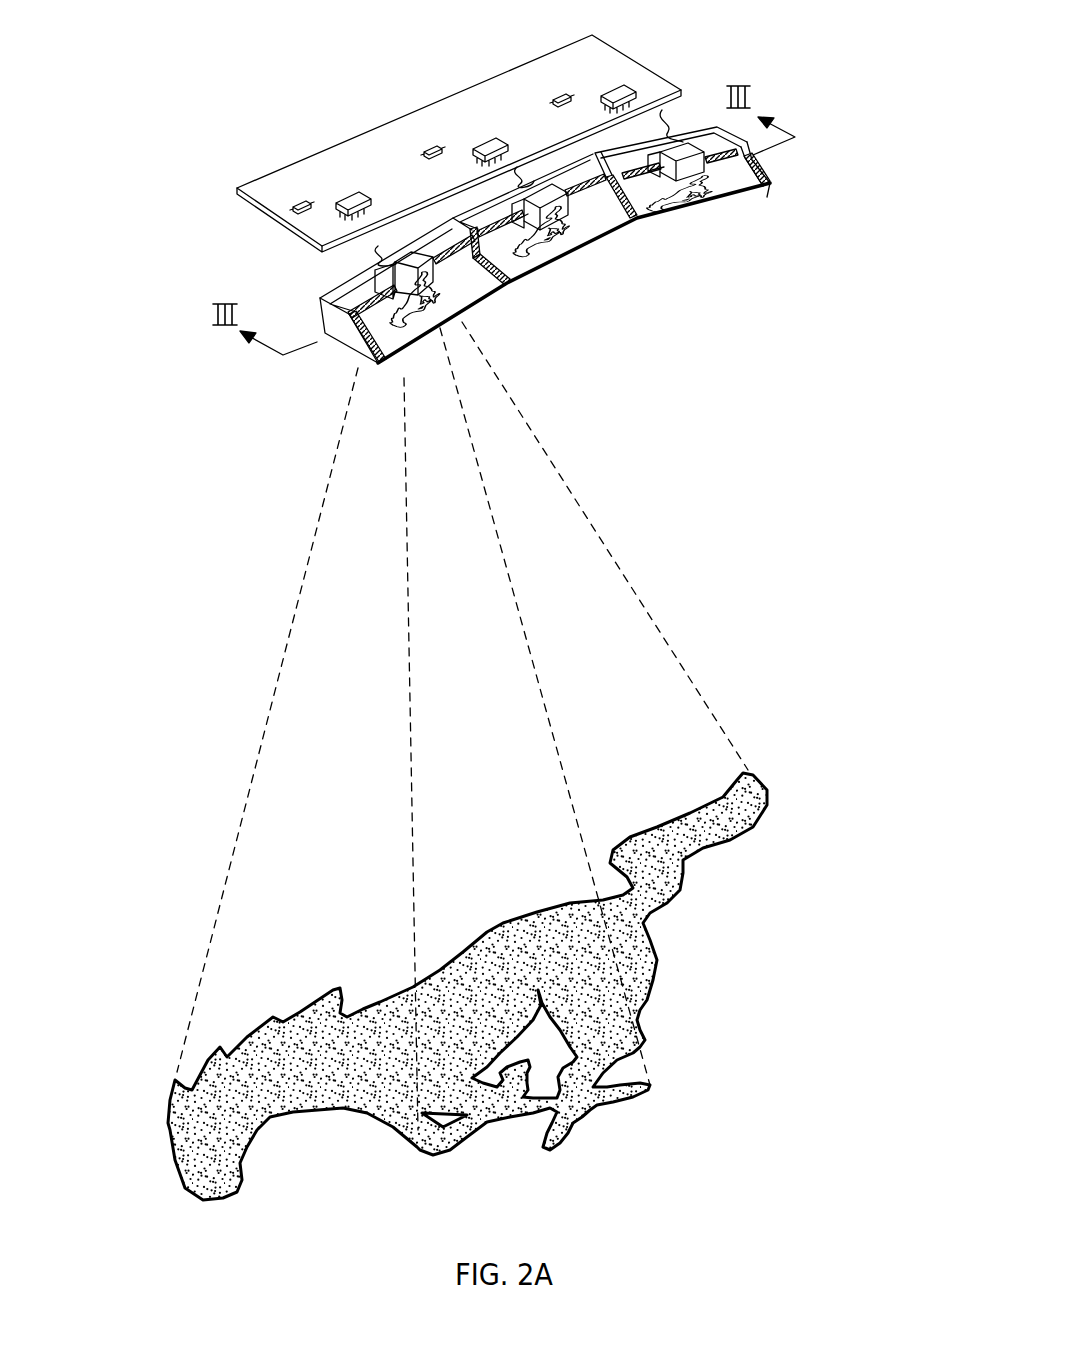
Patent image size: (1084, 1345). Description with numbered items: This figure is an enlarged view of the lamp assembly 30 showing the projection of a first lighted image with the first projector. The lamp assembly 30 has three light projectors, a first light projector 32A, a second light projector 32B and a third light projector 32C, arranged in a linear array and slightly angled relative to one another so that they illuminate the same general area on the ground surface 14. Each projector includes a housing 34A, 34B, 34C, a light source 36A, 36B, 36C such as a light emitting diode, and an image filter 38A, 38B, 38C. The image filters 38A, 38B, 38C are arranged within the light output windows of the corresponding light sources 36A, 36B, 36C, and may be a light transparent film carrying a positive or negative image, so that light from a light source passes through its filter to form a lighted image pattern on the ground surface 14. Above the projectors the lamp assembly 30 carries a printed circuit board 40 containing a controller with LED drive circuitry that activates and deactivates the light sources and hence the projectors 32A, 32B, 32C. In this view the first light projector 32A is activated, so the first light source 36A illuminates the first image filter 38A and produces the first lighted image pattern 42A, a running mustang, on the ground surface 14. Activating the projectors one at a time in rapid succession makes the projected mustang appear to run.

The lamp assembly 30 is at (818, 68).
The circuit board 40 is at (262, 186).
The first light projector 32A is at (422, 255).
The second light projector 32B is at (562, 179).
The third light projector 32C is at (709, 162).
The housing 34A is at (434, 255).
The housing 34B is at (551, 185).
The housing 34C is at (700, 135).
The first light source 36A is at (412, 255).
The second light source 36B is at (533, 180).
The third light source 36C is at (687, 142).
The first image filter 38A is at (426, 335).
The second image filter 38B is at (578, 257).
The third image filter 38C is at (687, 205).
The first lighted image pattern 42A is at (131, 1050).
The ground surface 14 is at (341, 1165).